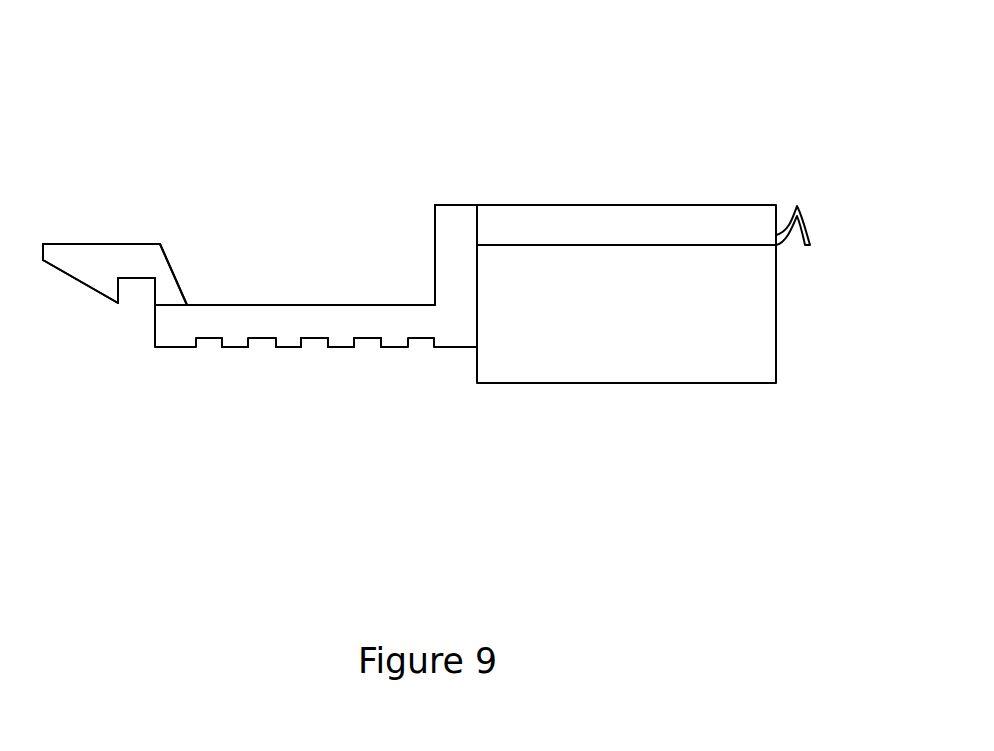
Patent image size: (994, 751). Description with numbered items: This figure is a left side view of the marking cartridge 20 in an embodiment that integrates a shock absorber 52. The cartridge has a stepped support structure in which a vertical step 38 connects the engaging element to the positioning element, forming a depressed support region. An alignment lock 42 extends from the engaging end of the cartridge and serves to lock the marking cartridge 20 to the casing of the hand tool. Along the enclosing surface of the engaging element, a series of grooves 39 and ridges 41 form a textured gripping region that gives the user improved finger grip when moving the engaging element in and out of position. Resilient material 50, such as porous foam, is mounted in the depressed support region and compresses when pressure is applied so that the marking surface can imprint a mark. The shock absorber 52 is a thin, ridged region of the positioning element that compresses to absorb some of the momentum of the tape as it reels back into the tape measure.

The marking cartridge 20 is at (588, 85).
The vertical step 38 is at (453, 267).
The grooves 39 is at (313, 340).
The ridges 41 is at (237, 348).
The alignment lock 42 is at (112, 263).
The resilient material 50 is at (650, 329).
The shock absorber 52 is at (818, 200).